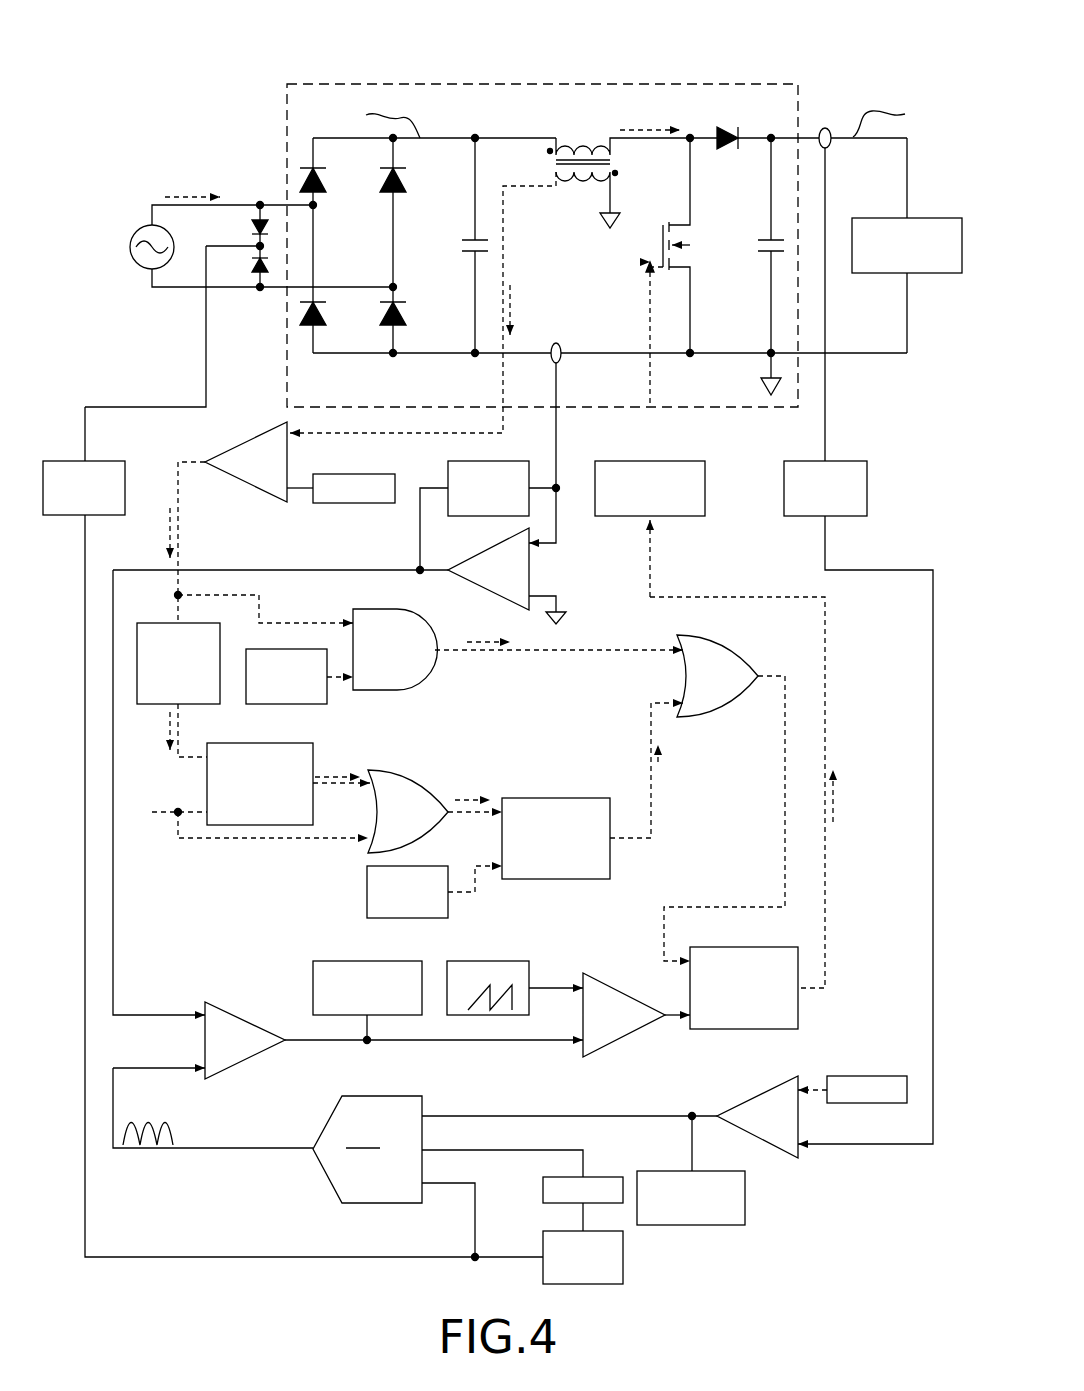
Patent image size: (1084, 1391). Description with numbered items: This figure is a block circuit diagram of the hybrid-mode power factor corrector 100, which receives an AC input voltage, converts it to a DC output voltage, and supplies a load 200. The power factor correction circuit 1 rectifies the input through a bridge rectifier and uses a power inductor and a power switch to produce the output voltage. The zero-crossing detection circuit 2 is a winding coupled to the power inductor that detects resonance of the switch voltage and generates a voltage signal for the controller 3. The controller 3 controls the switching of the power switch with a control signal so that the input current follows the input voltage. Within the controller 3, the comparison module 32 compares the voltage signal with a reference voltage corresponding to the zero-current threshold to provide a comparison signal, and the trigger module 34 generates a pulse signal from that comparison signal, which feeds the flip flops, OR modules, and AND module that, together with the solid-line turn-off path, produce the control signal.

The hybrid-mode power factor corrector 100 is at (478, 35).
The power factor correction circuit 1 is at (543, 92).
The zero-crossing detection circuit 2 is at (577, 183).
The load 200 is at (917, 222).
The controller 3 is at (811, 1203).
The comparison module 32 is at (240, 445).
The trigger module 34 is at (160, 626).